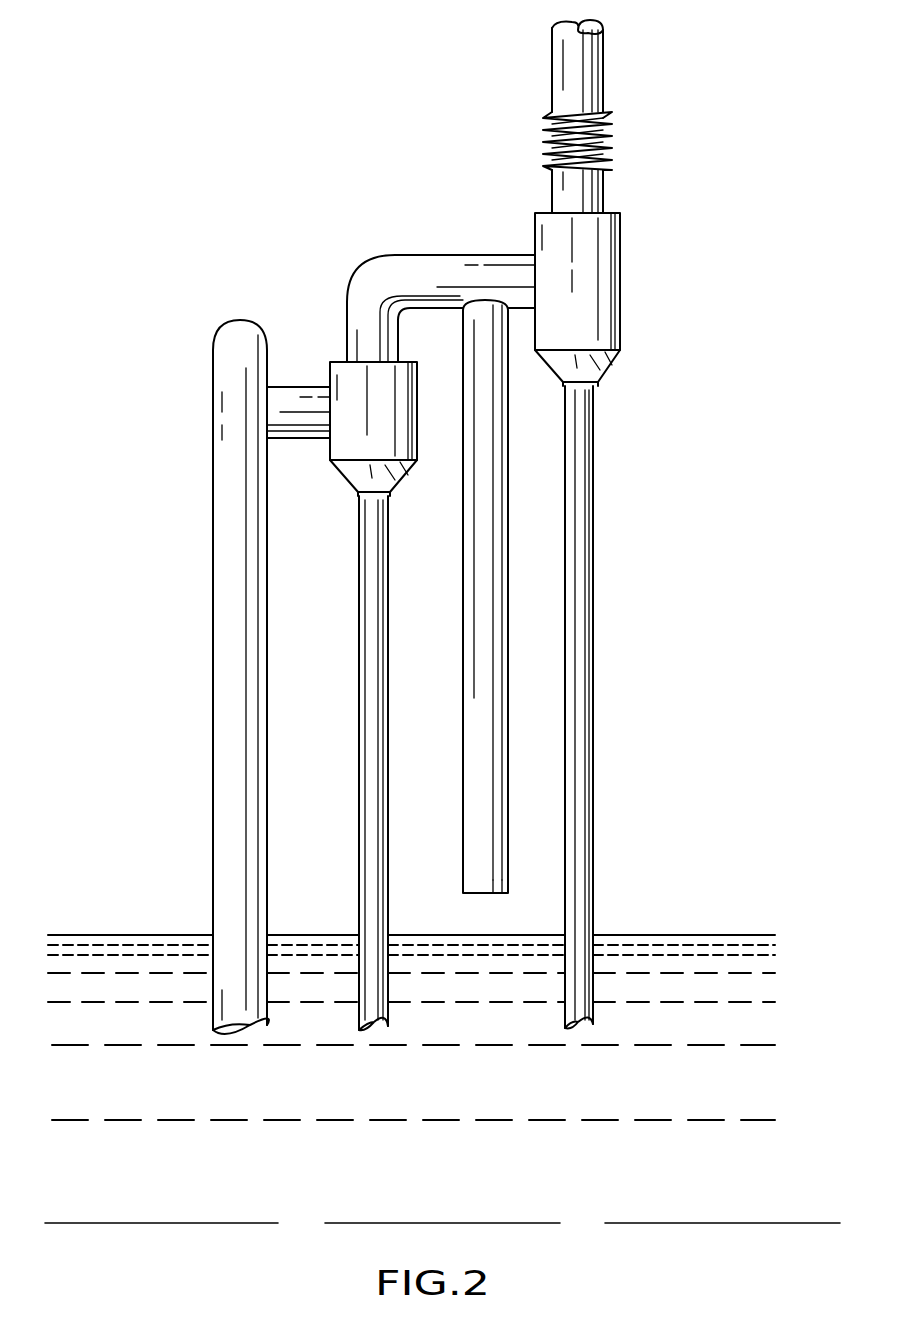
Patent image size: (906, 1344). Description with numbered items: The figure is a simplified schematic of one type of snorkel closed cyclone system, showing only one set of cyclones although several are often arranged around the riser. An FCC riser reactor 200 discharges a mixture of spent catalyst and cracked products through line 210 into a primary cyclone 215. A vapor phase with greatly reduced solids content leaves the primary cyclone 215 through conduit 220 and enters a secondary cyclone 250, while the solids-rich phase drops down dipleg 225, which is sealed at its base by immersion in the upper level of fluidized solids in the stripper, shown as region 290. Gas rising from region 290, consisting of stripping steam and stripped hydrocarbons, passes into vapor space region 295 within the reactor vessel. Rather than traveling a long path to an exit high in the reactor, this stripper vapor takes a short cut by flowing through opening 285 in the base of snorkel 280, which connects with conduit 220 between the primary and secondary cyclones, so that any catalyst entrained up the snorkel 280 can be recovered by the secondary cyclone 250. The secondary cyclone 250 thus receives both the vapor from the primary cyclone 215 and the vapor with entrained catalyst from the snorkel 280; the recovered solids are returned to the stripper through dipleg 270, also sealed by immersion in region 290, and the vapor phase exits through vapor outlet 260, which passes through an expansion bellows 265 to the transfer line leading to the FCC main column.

The FCC riser reactor 200 is at (213, 522).
The line 210 is at (304, 387).
The primary cyclone 215 is at (417, 382).
The conduit 220 is at (395, 255).
The dipleg 225 is at (388, 590).
The secondary cyclone 250 is at (622, 237).
The vapor outlet 260 is at (605, 180).
The expansion bellows 265 is at (610, 118).
The dipleg 270 is at (594, 458).
The snorkel 280 is at (463, 715).
The opening 285 is at (480, 895).
The region 290 is at (472, 1104).
The vapor space region 295 is at (212, 123).